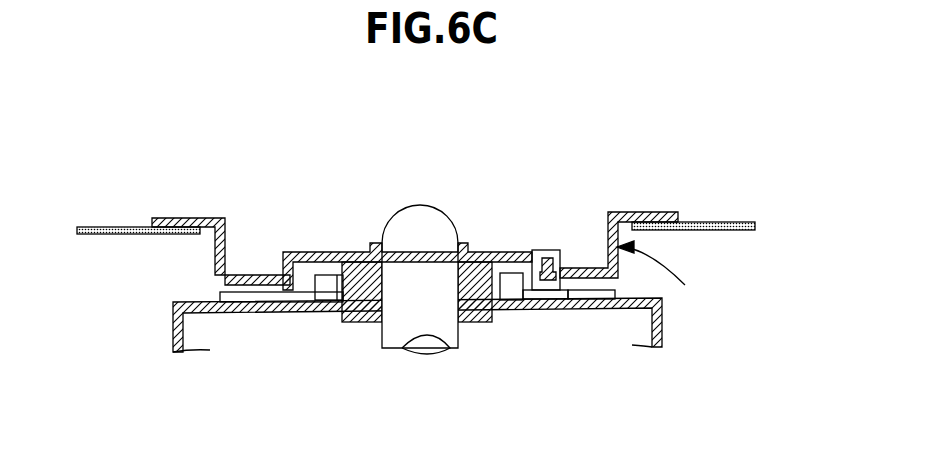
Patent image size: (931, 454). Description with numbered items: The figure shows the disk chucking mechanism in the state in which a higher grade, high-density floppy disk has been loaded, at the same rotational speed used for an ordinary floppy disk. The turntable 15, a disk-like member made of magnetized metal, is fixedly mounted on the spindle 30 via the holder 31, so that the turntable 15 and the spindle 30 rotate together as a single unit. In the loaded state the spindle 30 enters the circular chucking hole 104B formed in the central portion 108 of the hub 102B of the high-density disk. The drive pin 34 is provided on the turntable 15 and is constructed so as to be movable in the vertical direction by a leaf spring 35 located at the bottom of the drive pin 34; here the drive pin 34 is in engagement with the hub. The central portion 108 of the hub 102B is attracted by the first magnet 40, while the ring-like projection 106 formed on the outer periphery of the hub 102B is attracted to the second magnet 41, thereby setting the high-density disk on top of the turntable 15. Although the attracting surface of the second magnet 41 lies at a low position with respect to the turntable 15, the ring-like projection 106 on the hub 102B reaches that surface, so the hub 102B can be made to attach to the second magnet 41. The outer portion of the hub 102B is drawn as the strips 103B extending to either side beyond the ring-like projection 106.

The turntable 15 is at (662, 323).
The spindle 30 is at (410, 222).
The holder 31 is at (367, 322).
The drive pin 34 is at (547, 250).
The leaf spring 35 is at (543, 293).
The first magnet 40 is at (327, 288).
The second magnet 41 is at (237, 303).
The hub 102B is at (687, 281).
The terminal strip 103B is at (92, 236).
The chucking hole 104B is at (385, 247).
The ring-like projection 106 is at (245, 275).
The central portion 108 is at (523, 252).